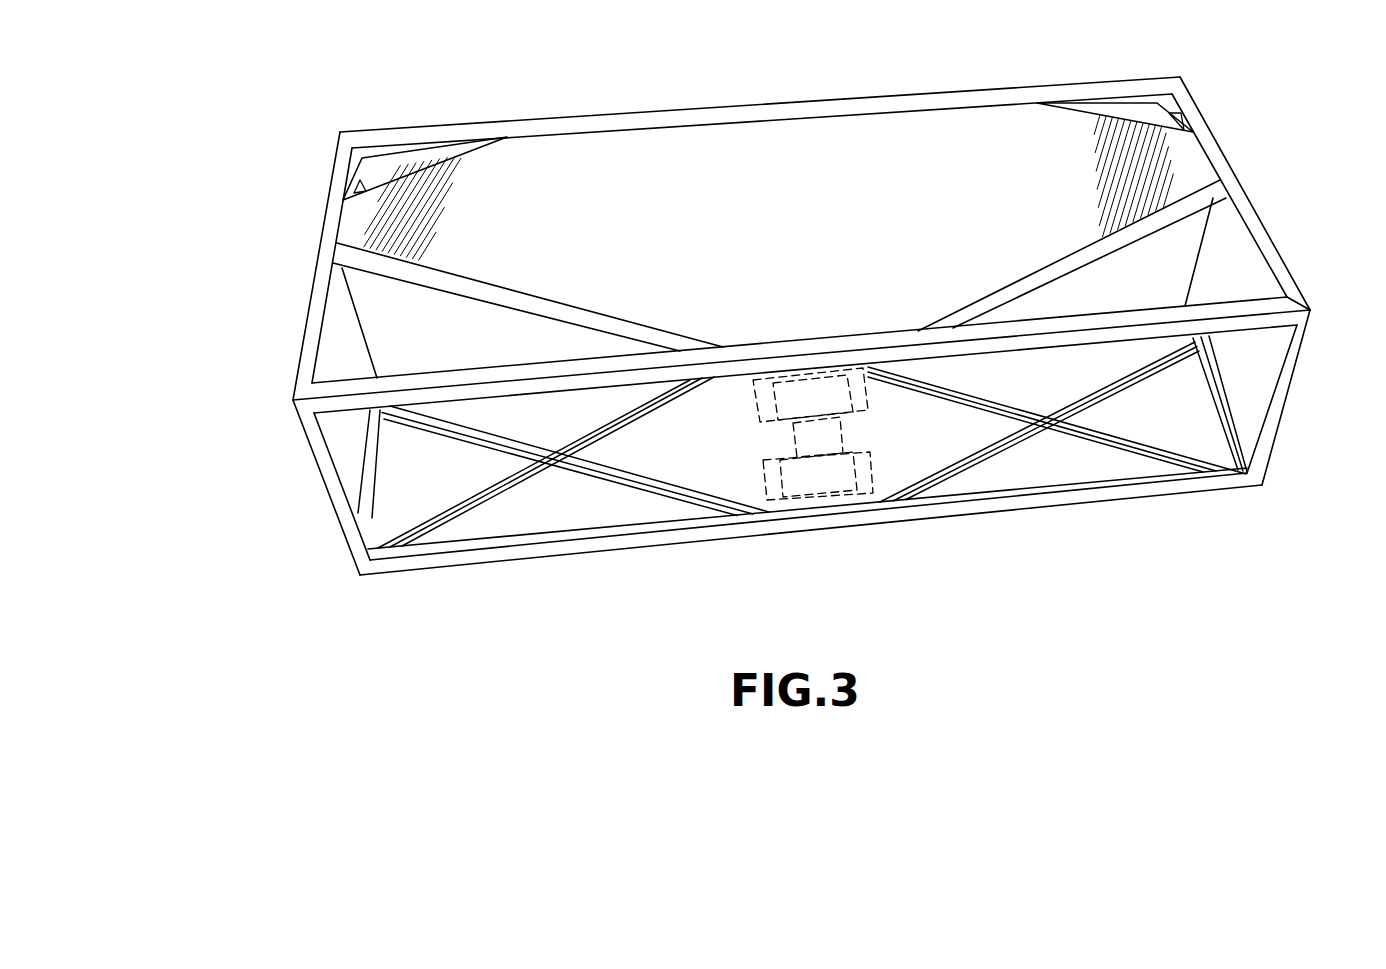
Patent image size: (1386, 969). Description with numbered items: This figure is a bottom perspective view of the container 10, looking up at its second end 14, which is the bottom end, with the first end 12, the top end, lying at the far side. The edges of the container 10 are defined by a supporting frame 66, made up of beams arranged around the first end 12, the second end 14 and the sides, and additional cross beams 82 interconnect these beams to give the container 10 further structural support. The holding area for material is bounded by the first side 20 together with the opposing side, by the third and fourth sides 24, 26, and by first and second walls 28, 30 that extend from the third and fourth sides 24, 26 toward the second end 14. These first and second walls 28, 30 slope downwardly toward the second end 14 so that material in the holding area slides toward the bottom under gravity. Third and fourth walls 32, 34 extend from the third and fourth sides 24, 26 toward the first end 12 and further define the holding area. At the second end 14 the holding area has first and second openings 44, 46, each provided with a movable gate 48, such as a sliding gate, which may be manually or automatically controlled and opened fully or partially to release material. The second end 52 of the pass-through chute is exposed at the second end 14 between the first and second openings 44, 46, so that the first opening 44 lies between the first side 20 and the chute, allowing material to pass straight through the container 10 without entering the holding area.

The container 10 is at (244, 218).
The first end 12 is at (1088, 83).
The second end 14 is at (1195, 497).
The first side 20 is at (623, 152).
The third side 24 is at (333, 223).
The fourth side 26 is at (1198, 222).
The first wall 28 is at (511, 397).
The second wall 30 is at (1120, 275).
The third wall 32 is at (428, 167).
The fourth wall 34 is at (1141, 106).
The first opening 44 is at (827, 394).
The second opening 46 is at (815, 478).
The movable gate 48 is at (767, 510).
The second end of the chute 52 is at (810, 435).
The supporting frame 66 is at (307, 369).
The cross beams 82 is at (508, 497).